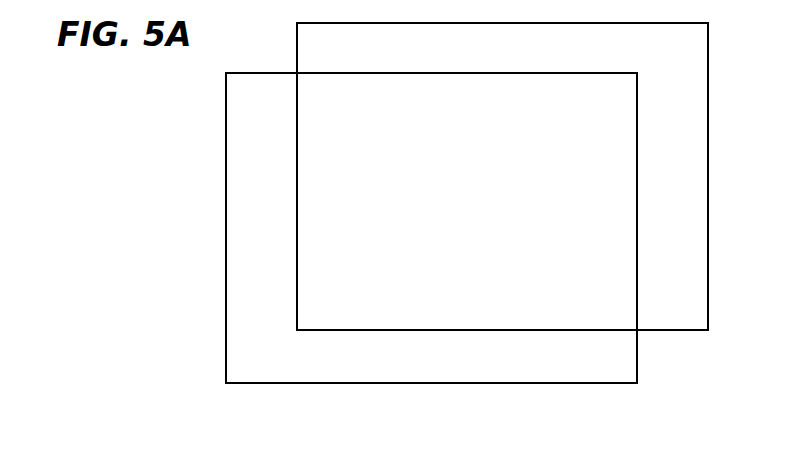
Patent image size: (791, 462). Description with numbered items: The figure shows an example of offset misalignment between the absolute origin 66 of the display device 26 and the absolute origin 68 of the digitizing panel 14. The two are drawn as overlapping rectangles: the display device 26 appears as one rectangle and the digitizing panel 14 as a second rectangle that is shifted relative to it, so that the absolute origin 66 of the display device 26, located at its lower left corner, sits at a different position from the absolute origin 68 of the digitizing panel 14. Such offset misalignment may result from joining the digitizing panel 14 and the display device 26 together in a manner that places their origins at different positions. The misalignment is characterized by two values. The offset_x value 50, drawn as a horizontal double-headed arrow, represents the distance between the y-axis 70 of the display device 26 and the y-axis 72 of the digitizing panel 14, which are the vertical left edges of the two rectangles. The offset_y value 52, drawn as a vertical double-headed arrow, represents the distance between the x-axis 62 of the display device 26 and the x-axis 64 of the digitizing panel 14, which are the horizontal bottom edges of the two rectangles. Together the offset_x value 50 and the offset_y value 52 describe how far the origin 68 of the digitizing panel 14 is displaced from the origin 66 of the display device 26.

The digitizing panel 14 is at (358, 54).
The display device 26 is at (252, 232).
The offset_x value 50 is at (297, 182).
The offset_y value 52 is at (430, 330).
The x-axis of display device 62 is at (547, 383).
The x-axis of the digitizing panel 64 is at (540, 330).
The absolute origin of the display device 66 is at (224, 383).
The absolute origin of the digitizing panel 68 is at (297, 330).
The y-axis of the display device 70 is at (226, 124).
The y-axis of the digitizing panel 72 is at (297, 123).